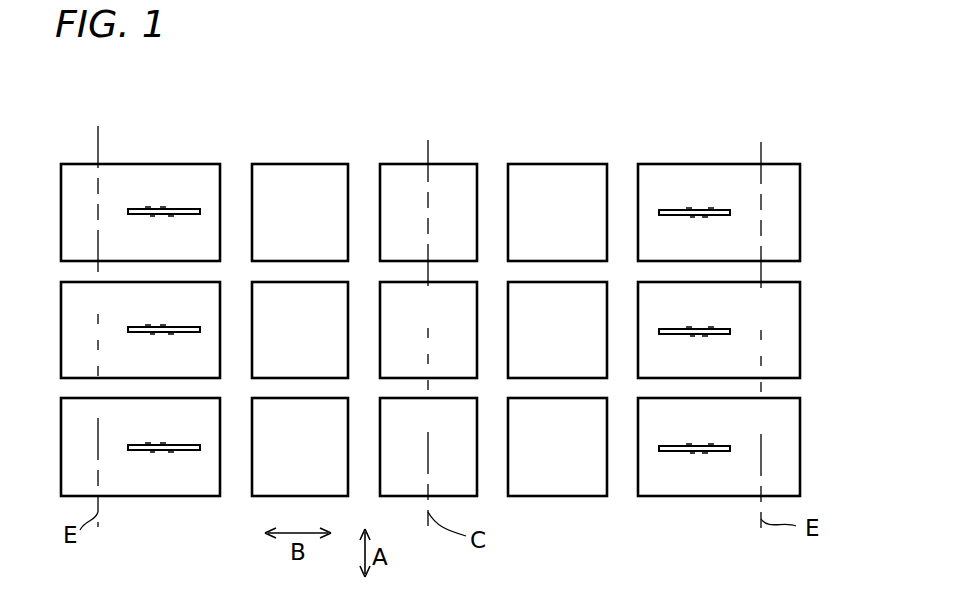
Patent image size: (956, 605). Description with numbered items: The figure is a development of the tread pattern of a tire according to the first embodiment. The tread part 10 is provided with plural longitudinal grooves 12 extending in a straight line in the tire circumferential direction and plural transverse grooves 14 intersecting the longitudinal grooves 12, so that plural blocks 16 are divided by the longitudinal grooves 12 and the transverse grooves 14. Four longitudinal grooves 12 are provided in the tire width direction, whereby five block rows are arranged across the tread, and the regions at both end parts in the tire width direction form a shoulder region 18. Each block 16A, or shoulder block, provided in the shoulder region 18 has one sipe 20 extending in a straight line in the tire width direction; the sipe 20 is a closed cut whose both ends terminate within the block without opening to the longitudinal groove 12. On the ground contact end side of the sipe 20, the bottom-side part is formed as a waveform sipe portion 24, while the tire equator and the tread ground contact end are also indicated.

The tread part 10 is at (459, 88).
The longitudinal groove 12 is at (233, 181).
The transverse groove 14 is at (748, 272).
The block 16 is at (558, 497).
The shoulder block 16A is at (178, 174).
The shoulder region 18 is at (153, 504).
The sipe 20 is at (730, 211).
The waveform sipe portion 24 is at (135, 325).